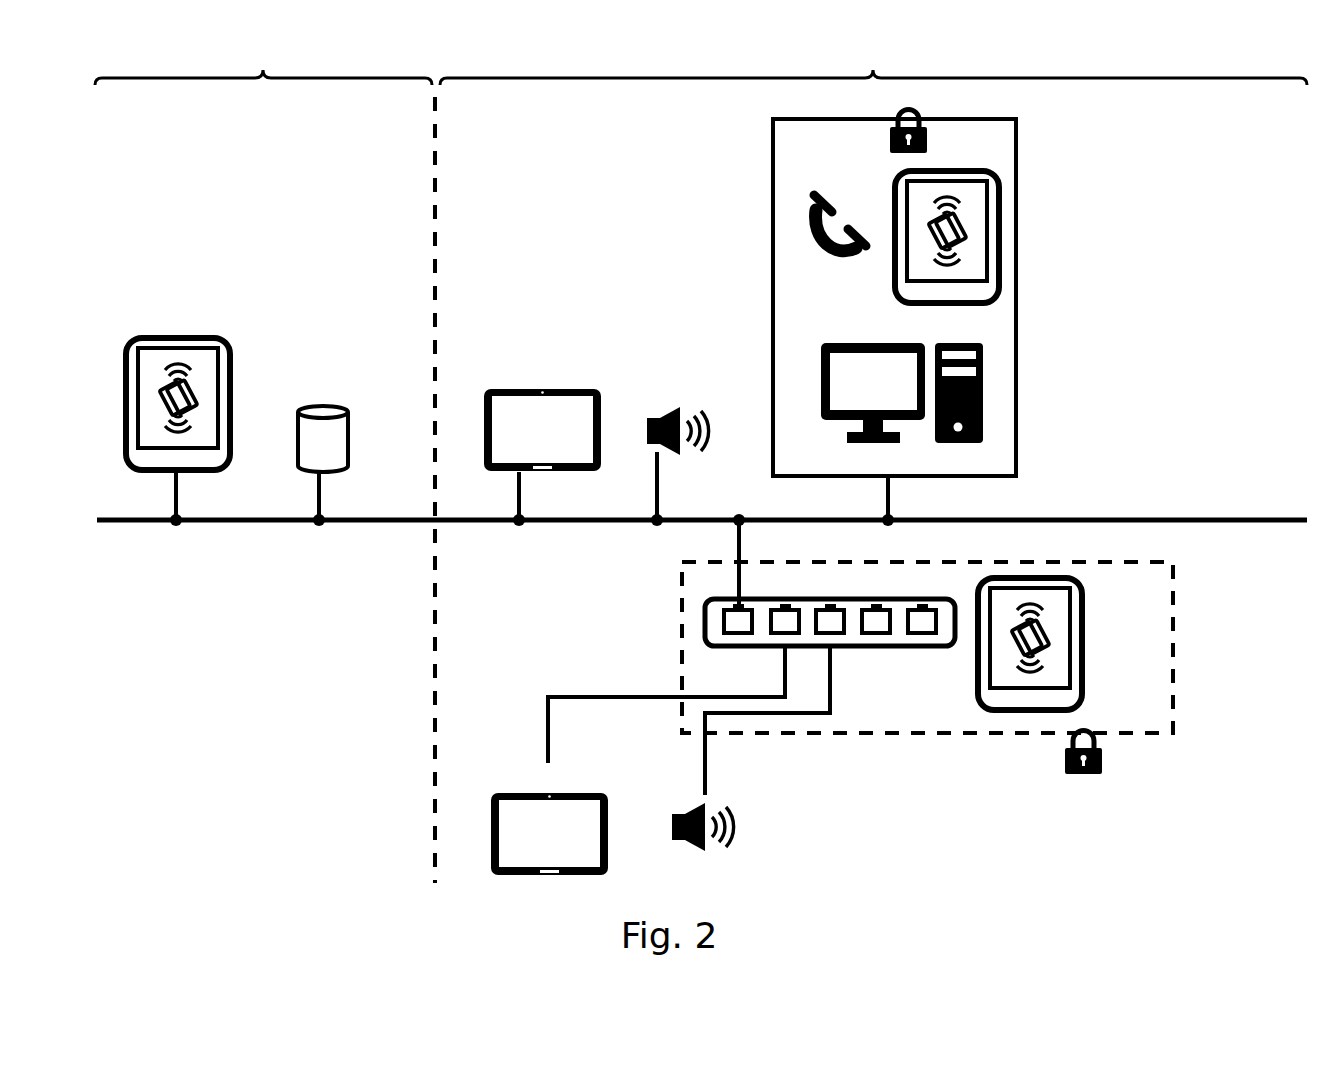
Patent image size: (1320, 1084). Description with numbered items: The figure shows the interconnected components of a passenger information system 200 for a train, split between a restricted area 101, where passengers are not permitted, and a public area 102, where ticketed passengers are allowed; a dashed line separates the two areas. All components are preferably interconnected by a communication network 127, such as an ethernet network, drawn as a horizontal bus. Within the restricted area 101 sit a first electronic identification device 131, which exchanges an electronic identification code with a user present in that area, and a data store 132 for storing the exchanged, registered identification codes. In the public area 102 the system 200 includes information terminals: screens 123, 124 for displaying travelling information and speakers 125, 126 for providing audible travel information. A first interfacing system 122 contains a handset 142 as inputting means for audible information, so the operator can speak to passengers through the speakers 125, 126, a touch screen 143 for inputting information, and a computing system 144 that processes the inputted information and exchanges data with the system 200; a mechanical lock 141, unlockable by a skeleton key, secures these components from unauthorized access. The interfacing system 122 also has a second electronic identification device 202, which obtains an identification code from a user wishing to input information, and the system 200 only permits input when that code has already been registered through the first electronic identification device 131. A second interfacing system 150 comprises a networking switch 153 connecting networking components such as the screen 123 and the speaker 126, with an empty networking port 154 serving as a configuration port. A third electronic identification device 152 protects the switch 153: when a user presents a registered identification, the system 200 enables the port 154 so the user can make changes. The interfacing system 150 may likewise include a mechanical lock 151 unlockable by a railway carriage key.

The restricted area 101 is at (263, 65).
The public area 102 is at (873, 65).
The interfacing system 122 is at (1018, 160).
The screen 123 is at (508, 791).
The screen 124 is at (565, 386).
The speaker 125 is at (676, 404).
The speaker 126 is at (738, 826).
The communication network 127 is at (1231, 519).
The first electronic identification device 131 is at (235, 378).
The data store 132 is at (350, 432).
The mechanical lock 141 is at (924, 113).
The handset 142 is at (805, 215).
The touch screen 143 is at (848, 360).
The computing system 144 is at (985, 420).
The interfacing system 150 is at (1175, 723).
The mechanical lock 151 is at (1104, 766).
The third electronic identification device 152 is at (1078, 657).
The networking switch 153 is at (705, 625).
The networking port 154 is at (876, 633).
The passenger information system 200 is at (1164, 268).
The second electronic identification device 202 is at (1004, 245).